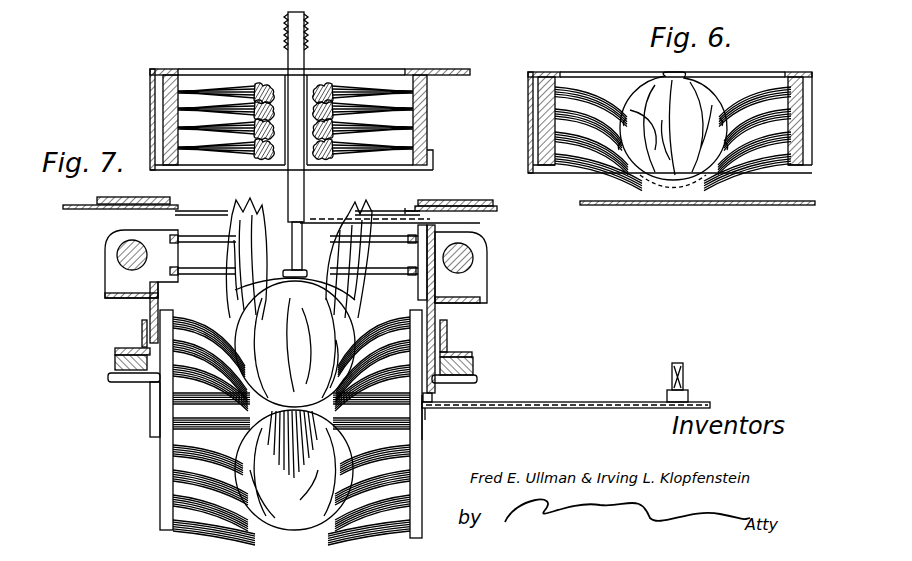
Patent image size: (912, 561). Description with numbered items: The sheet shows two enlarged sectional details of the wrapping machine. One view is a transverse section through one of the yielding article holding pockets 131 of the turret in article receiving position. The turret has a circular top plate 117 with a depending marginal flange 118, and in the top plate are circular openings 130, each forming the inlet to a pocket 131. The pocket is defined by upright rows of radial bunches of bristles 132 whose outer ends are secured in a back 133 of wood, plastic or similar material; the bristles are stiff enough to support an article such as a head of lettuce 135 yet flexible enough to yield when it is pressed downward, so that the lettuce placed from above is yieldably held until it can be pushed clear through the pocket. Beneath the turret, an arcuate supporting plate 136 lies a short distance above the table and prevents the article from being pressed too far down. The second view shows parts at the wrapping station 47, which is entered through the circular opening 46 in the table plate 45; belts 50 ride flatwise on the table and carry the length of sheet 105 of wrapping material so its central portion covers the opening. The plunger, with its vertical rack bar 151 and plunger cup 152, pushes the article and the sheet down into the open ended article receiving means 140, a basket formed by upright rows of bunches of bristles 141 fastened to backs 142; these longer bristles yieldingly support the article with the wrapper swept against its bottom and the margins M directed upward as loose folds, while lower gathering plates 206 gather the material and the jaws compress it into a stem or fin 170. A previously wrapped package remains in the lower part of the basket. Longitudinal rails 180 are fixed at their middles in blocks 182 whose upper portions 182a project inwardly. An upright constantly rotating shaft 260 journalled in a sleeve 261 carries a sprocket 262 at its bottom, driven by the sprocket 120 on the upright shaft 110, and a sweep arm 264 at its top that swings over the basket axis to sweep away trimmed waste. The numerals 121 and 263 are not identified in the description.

In FIG. 7, the table plate 45 is at (63, 205).
In FIG. 7, the circular opening 46 is at (408, 212).
In FIG. 7, the wrapping station 47 is at (76, 408).
In FIG. 7, the belts 50 is at (120, 194).
In FIG. 7, the length of sheet 105 is at (242, 330).
In FIG. 7, the upright shaft 110 is at (684, 374).
In FIG. 7, the top plate 117 is at (455, 69).
In FIG. 6, the top plate 117 is at (540, 72).
In FIG. 7, the marginal flange 118 is at (150, 82).
In FIG. 6, the marginal flange 118 is at (538, 98).
In FIG. 7, the sprocket 120 is at (690, 401).
In FIG. 7, the side plate 121 is at (424, 459).
In FIG. 7, the circular openings 130 is at (405, 72).
In FIG. 6, the circular openings 130 is at (790, 74).
In FIG. 7, the article holding pocket 131 is at (322, 86).
In FIG. 6, the article holding pocket 131 is at (718, 96).
In FIG. 7, the bunches of bristles 132 is at (211, 86).
In FIG. 6, the bunches of bristles 132 is at (749, 156).
In FIG. 7, the back 133 is at (166, 103).
In FIG. 6, the back 133 is at (552, 160).
In FIG. 7, the head of lettuce 135 is at (295, 344).
In FIG. 6, the head of lettuce 135 is at (650, 88).
In FIG. 6, the arcuate supporting plate 136 is at (758, 206).
In FIG. 7, the article receiving means 140 is at (186, 440).
In FIG. 7, the bunches of bristles 141 is at (180, 472).
In FIG. 7, the back 142 is at (167, 505).
In FIG. 7, the rack bar 151 is at (304, 35).
In FIG. 7, the plunger cup 152 is at (318, 284).
In FIG. 7, the stem or fin 170 is at (294, 453).
In FIG. 7, the longitudinal rails 180 is at (117, 258).
In FIG. 7, the block 182 is at (118, 284).
In FIG. 7, the upper portion 182a is at (160, 250).
In FIG. 7, the lower gathering plates 206 is at (420, 230).
In FIG. 7, the upright constantly rotating shaft 260 is at (435, 318).
In FIG. 7, the sleeve 261 is at (446, 356).
In FIG. 7, the sprocket 262 is at (429, 412).
In FIG. 7, the slide bar 263 is at (560, 398).
In FIG. 7, the sweep arm 264 is at (386, 226).
In FIG. 7, the margins M is at (238, 222).